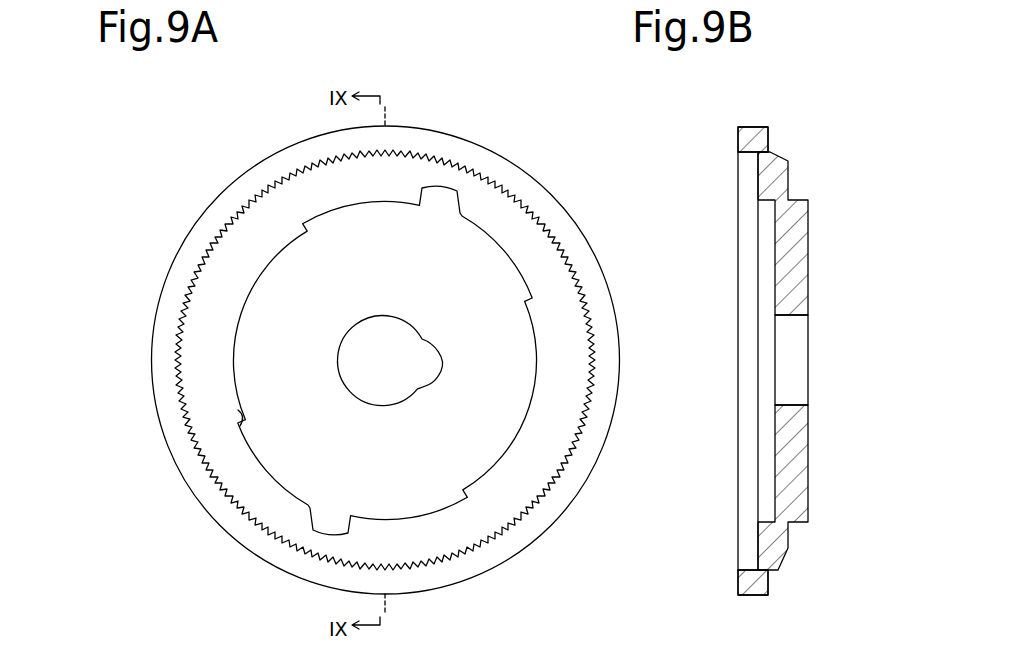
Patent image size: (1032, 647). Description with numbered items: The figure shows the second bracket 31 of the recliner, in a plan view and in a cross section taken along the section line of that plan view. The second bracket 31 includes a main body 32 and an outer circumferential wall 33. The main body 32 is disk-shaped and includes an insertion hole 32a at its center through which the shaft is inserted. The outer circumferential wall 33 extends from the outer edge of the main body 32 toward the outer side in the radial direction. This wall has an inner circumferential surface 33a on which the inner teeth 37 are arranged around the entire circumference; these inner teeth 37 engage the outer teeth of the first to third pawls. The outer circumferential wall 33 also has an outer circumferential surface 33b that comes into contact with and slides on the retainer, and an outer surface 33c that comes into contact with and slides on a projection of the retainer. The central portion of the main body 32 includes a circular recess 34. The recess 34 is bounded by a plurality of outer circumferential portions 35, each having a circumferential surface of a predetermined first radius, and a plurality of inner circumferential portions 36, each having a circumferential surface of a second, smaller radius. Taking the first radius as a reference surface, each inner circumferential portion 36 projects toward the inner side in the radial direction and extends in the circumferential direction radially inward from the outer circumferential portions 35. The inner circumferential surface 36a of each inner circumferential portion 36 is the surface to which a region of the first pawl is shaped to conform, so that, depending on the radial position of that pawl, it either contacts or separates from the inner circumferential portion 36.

In FIG. 9A, the second bracket 31 is at (534, 127).
In FIG. 9B, the second bracket 31 is at (808, 91).
In FIG. 9A, the main body 32 is at (510, 212).
In FIG. 9B, the main body 32 is at (808, 123).
In FIG. 9A, the insertion hole 32a is at (398, 327).
In FIG. 9B, the insertion hole 32a is at (808, 321).
In FIG. 9A, the outer circumferential wall 33 is at (569, 224).
In FIG. 9B, the outer circumferential wall 33 is at (768, 123).
In FIG. 9B, the inner circumferential surface 33a is at (748, 572).
In FIG. 9A, the outer circumferential surface 33b is at (617, 305).
In FIG. 9B, the outer circumferential surface 33b is at (748, 596).
In FIG. 9B, the outer surface 33c is at (773, 590).
In FIG. 9A, the recess 34 is at (100, 405).
In FIG. 9A, the outer circumferential portion 35 is at (243, 442).
In FIG. 9A, the inner circumferential portion 36 is at (240, 400).
In FIG. 9A, the inner circumferential surface 36a is at (257, 284).
In FIG. 9A, the inner teeth 37 is at (582, 411).